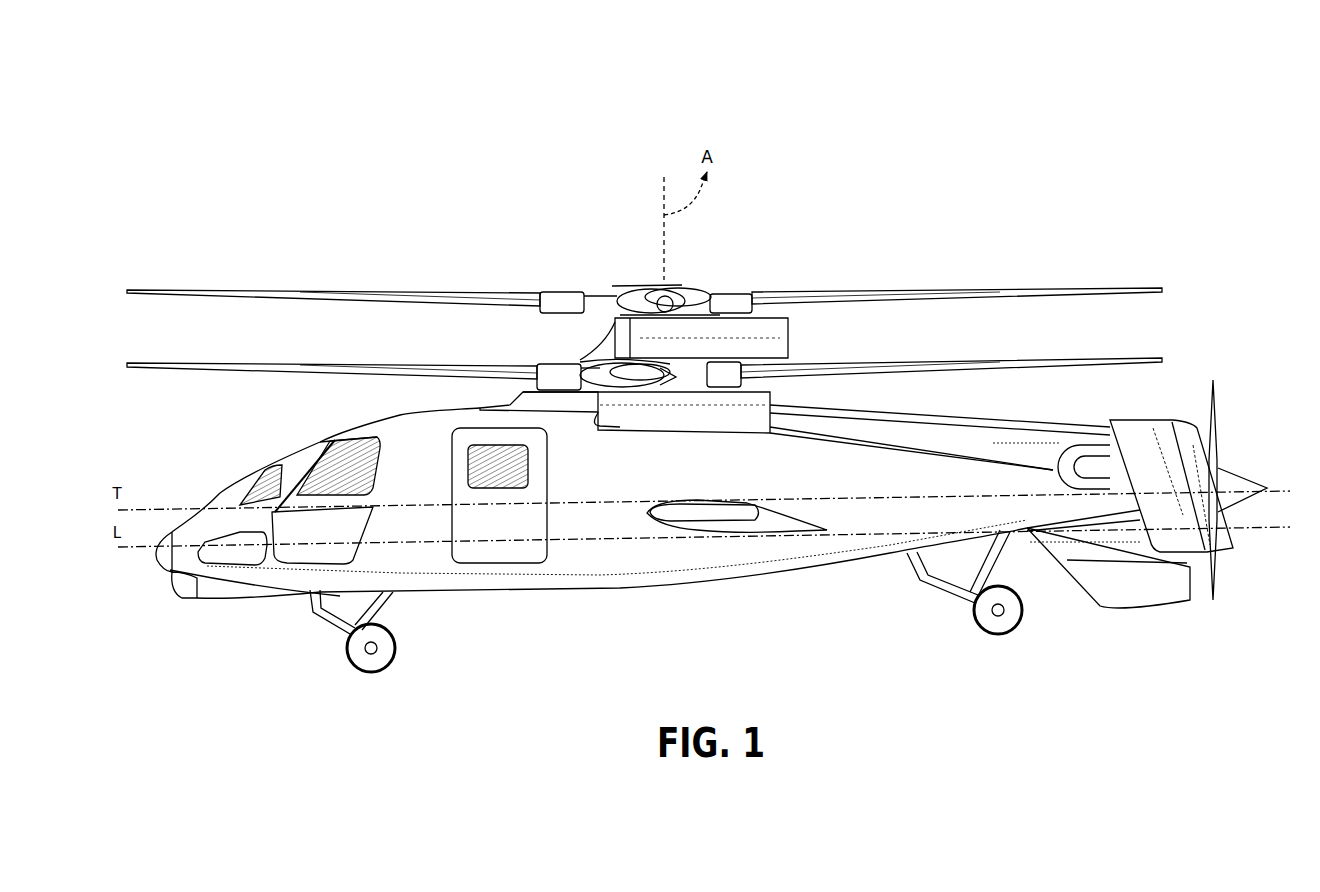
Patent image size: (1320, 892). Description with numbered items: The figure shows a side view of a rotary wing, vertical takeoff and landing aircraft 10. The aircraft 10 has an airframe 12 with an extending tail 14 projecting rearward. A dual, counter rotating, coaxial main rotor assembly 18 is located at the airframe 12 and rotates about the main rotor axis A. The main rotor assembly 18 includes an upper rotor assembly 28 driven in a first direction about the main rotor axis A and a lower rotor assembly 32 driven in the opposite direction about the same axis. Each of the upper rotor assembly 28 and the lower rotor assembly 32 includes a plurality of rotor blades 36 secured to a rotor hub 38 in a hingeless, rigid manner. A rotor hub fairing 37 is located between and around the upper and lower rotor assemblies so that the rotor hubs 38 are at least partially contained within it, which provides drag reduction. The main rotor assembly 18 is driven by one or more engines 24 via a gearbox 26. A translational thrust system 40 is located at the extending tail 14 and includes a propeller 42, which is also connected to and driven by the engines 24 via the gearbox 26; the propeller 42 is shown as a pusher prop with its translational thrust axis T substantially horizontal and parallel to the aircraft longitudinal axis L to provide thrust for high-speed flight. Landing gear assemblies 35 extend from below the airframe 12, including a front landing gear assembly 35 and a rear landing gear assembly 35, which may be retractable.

The rotary wing aircraft 10 is at (312, 135).
The airframe 12 is at (502, 593).
The extending tail 14 is at (887, 553).
The main rotor assembly 18 is at (597, 247).
The engine 24 is at (753, 420).
The gearbox 26 is at (643, 413).
The upper rotor assembly 28 is at (245, 278).
The lower rotor assembly 32 is at (235, 380).
The landing gear assembly 35 is at (352, 665).
The rotor blade 36 is at (965, 290).
The rotor hub fairing 37 is at (788, 333).
The rotor hub 38 is at (676, 291).
The translational thrust system 40 is at (1200, 662).
The propeller 42 is at (1215, 415).